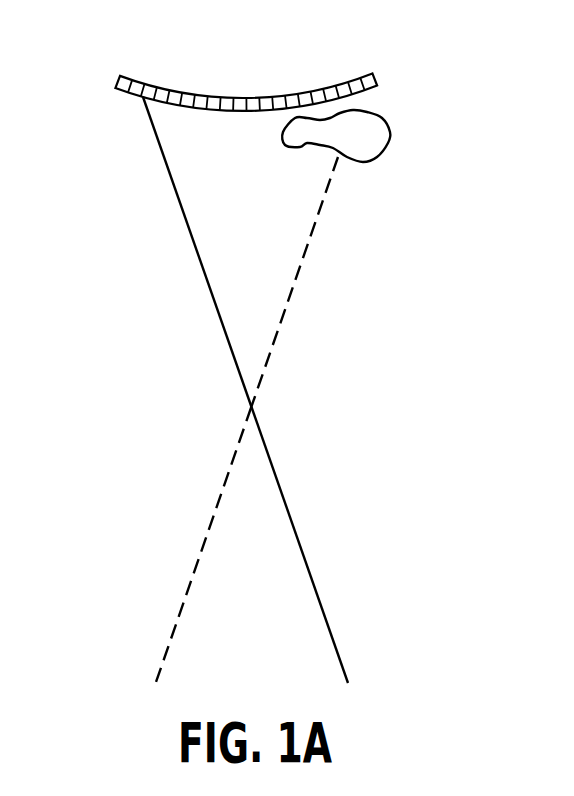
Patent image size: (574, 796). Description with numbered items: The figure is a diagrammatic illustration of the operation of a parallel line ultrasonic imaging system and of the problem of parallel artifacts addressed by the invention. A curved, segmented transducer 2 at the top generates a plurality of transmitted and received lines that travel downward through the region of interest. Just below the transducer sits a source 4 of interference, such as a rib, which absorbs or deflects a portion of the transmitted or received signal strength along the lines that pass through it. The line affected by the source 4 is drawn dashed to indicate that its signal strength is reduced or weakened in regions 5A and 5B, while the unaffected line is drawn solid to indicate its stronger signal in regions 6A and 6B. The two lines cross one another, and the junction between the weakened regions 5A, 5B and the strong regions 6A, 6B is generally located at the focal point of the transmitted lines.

The transducer 2 is at (247, 97).
The source of interference 4 is at (391, 132).
The region of weakened signal strength 5A is at (348, 161).
The region of weakened signal strength 5B is at (238, 411).
The region of unweakened signal strength 6A is at (135, 106).
The region of unweakened signal strength 6B is at (265, 412).